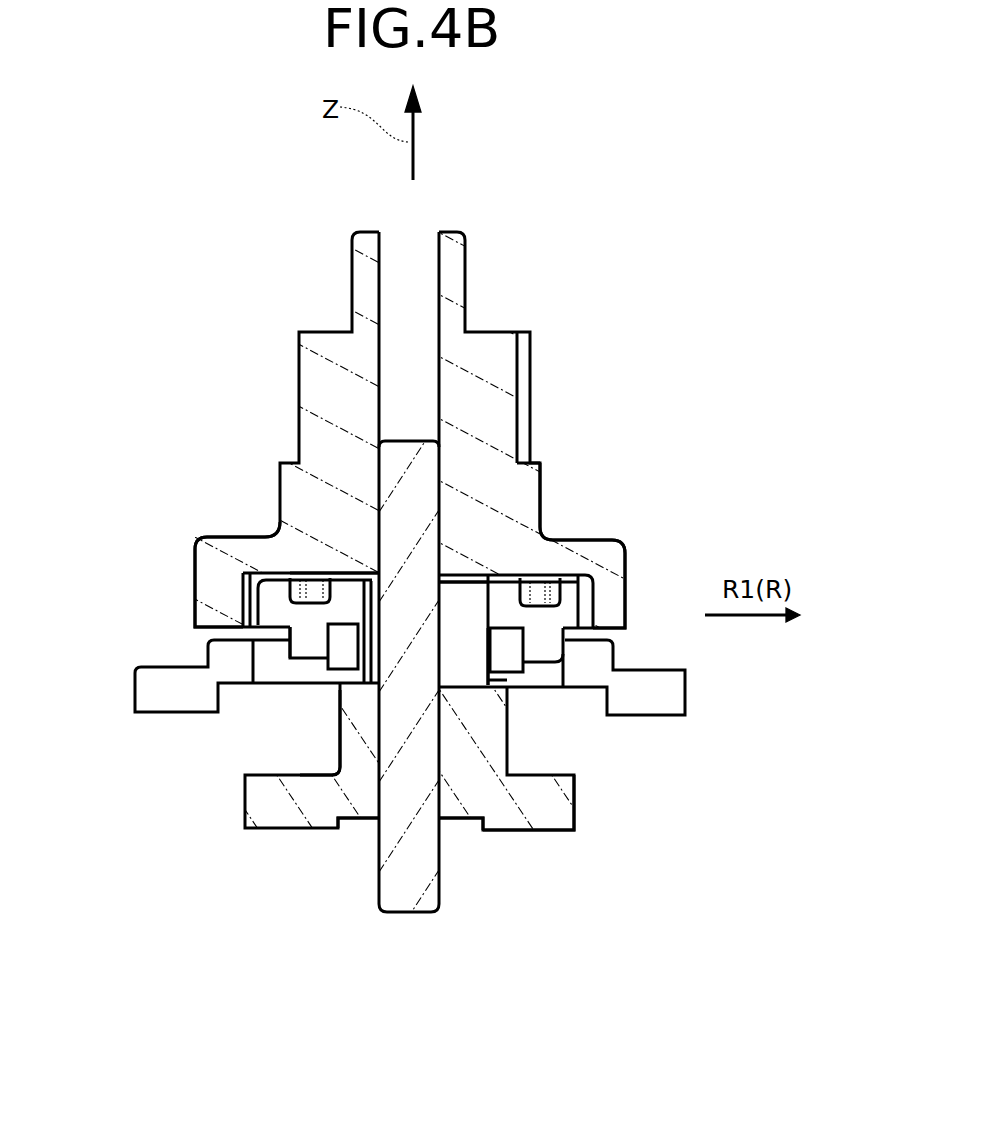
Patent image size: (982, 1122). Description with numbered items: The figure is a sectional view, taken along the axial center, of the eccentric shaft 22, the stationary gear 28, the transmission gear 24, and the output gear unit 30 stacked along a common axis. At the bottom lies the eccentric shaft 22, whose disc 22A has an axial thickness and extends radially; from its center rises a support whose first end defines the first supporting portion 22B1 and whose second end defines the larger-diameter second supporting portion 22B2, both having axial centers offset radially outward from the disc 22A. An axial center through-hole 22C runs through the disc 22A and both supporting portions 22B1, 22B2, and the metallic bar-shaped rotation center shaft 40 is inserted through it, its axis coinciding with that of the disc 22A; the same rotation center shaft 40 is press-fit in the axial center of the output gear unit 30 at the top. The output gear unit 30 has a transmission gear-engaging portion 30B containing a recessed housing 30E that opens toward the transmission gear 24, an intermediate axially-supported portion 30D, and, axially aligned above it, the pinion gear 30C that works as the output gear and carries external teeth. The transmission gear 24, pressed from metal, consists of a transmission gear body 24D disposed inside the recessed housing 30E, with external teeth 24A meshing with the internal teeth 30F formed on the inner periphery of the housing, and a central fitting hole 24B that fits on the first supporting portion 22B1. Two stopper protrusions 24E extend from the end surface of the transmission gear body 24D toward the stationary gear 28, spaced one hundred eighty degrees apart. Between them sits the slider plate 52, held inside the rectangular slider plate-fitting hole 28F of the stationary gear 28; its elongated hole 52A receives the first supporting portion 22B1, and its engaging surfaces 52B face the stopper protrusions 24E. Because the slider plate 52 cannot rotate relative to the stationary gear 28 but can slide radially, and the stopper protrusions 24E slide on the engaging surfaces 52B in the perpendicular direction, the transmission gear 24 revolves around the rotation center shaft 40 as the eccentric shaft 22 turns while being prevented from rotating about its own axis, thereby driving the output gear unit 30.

The eccentric shaft 22 is at (536, 838).
The disc 22A is at (577, 830).
The first supporting portion 22B1 is at (313, 587).
The second supporting portion 22B2 is at (313, 770).
The axial center through-hole 22C is at (443, 843).
The transmission gear 24 is at (507, 580).
The external teeth 24A is at (250, 595).
The fitting hole 24B is at (455, 573).
The transmission gear body 24D is at (593, 582).
The stopper protrusions 24E is at (568, 652).
The stationary gear 28 is at (690, 698).
The slider plate-fitting hole 28F is at (288, 660).
The output gear unit 30 is at (467, 229).
The transmission gear-engaging portion 30B is at (627, 600).
The pinion gear 30C is at (530, 355).
The axially-supported portion 30D is at (545, 505).
The recessed housing 30E is at (341, 583).
The internal teeth 30F is at (205, 537).
The rotation center shaft 40 is at (432, 866).
The slider plate 52 is at (340, 713).
The elongated hole 52A is at (490, 668).
The engaging surfaces 52B is at (527, 668).